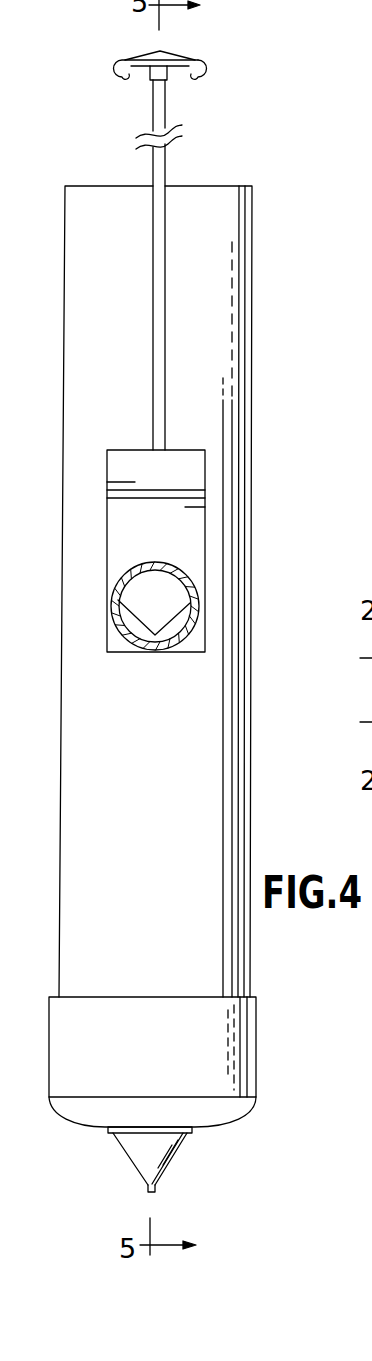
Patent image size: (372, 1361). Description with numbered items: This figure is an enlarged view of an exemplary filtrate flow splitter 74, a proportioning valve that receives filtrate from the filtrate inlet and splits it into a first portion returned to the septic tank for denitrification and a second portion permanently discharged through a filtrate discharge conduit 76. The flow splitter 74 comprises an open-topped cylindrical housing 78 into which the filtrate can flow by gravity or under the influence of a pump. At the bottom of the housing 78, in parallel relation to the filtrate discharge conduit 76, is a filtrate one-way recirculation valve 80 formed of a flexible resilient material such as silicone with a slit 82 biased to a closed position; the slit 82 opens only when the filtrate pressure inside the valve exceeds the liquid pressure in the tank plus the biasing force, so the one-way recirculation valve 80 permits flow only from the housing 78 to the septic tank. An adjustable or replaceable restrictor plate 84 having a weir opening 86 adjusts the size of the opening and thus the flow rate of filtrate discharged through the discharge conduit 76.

The filtrate flow splitter 74 is at (280, 457).
The filtrate discharge conduit 76 is at (130, 641).
The cylindrical housing 78 is at (252, 307).
The filtrate one-way recirculation valve 80 is at (176, 1160).
The slit 82 is at (148, 1193).
The restrictor plate 84 is at (205, 534).
The weir opening 86 is at (176, 620).